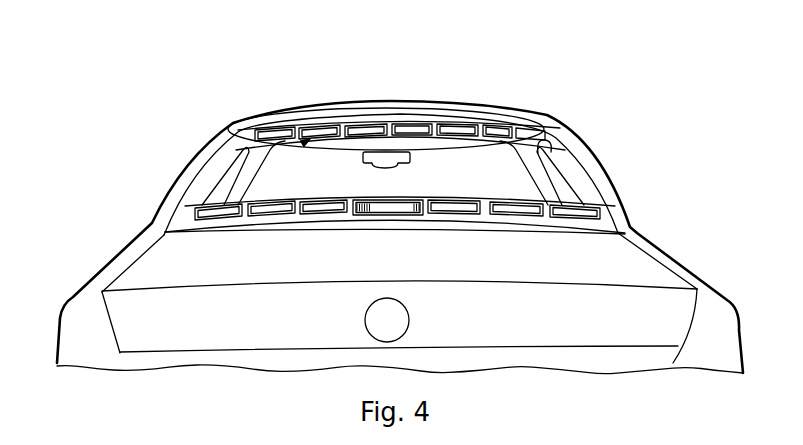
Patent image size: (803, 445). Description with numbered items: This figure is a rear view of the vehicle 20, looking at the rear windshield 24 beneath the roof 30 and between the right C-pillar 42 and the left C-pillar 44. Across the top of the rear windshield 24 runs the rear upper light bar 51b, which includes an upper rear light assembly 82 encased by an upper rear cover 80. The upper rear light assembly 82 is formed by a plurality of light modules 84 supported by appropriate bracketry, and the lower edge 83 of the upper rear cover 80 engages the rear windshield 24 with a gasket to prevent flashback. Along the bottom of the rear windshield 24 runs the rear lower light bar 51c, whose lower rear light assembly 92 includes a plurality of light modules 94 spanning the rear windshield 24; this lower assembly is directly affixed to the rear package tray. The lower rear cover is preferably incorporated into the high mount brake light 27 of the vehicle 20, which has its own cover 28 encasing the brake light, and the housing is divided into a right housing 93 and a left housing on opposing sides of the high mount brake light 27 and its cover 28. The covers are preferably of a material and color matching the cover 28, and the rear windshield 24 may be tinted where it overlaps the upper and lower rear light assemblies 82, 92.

The vehicle 20 is at (247, 72).
The rear windshield 24 is at (397, 192).
The high mount brake light 27 is at (395, 220).
The cover 28 is at (640, 267).
The roof 30 is at (345, 102).
The right C-pillar 42 is at (620, 191).
The left C-pillar 44 is at (176, 190).
The rear upper light bar 51b is at (376, 114).
The rear lower light bar 51c is at (304, 193).
The upper rear cover 80 is at (508, 156).
The upper rear light assembly 82 is at (300, 190).
The lower edge 83 is at (550, 192).
The light modules 84 is at (330, 128).
The lower rear light assembly 92 is at (328, 218).
The right housing 93 is at (547, 198).
The light modules 94 is at (230, 214).